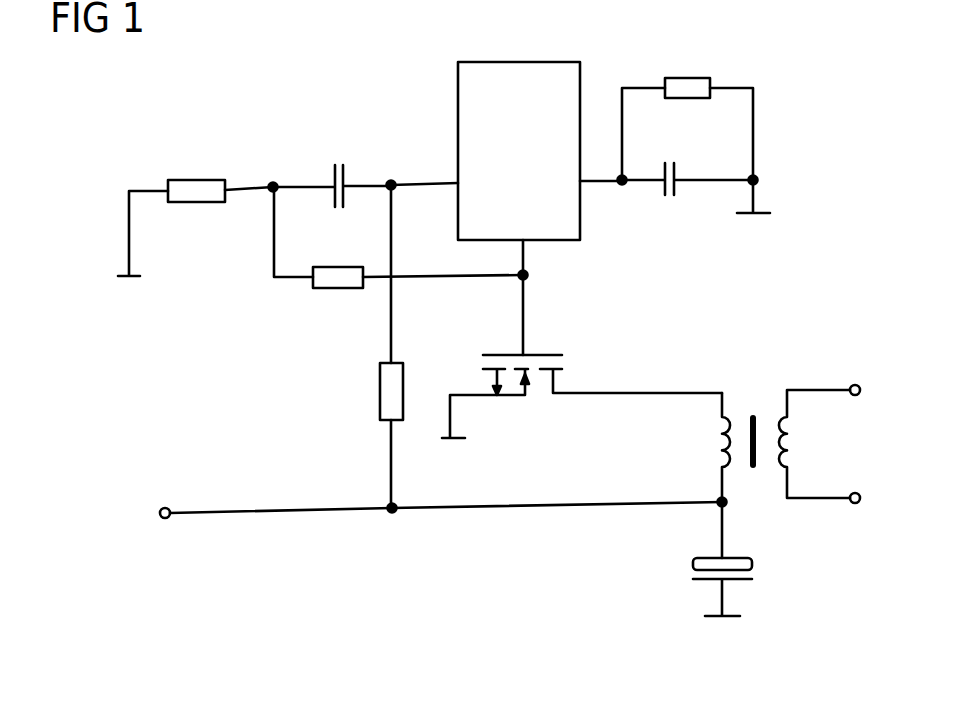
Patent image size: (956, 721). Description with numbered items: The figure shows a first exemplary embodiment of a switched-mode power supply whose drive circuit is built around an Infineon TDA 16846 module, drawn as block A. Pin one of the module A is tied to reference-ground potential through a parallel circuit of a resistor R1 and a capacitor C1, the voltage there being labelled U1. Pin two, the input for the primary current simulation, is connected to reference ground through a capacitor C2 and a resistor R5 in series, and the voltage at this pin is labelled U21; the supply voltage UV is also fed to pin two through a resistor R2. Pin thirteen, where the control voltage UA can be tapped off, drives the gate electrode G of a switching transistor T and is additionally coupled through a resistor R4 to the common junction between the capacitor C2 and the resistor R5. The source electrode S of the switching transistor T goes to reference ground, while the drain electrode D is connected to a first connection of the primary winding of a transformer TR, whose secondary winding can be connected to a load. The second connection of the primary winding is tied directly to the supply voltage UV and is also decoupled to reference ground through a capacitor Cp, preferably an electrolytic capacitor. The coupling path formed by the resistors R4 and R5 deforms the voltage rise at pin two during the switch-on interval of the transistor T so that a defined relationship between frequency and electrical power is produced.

The control IC (TDA 16846) A is at (519, 132).
The resistor R1 is at (687, 109).
The resistor R2 is at (371, 346).
The resistor R4 is at (398, 258).
The resistor R5 is at (195, 204).
The capacitor C1 is at (696, 197).
The capacitor C2 is at (330, 169).
The capacitor Cp is at (748, 559).
The switching transistor T is at (582, 378).
The gate electrode G is at (498, 333).
The source electrode S is at (492, 420).
The drain electrode D is at (562, 420).
The transformer TR is at (789, 419).
The voltage at pin 2 U21 is at (423, 157).
The voltage at pin 1 U1 is at (603, 197).
The output voltage at pin 13 UA is at (550, 297).
The supply voltage UV is at (436, 496).